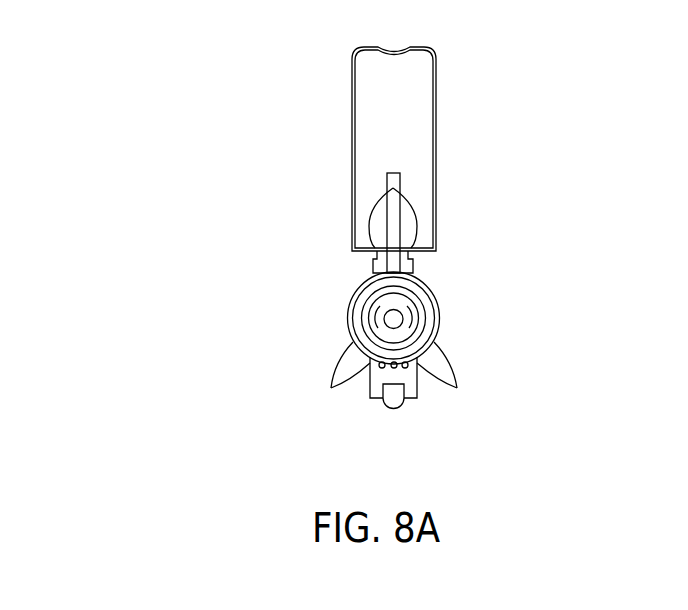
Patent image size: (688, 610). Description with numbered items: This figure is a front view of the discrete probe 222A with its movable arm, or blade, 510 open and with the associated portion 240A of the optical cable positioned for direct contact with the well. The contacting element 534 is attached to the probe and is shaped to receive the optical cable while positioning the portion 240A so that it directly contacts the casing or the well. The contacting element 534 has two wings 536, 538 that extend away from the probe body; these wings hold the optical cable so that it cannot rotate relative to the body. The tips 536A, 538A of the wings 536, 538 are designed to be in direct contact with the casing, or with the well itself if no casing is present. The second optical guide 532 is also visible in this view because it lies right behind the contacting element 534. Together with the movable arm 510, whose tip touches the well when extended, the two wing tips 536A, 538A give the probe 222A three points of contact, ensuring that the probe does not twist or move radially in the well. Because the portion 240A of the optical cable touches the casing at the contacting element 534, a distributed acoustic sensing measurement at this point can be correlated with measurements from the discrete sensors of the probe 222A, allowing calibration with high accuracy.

The discrete probe 222A is at (260, 206).
The movable arm 510 is at (423, 163).
The second optical guide 532 is at (370, 398).
The contacting element 534 is at (117, 367).
The wing 536 is at (328, 368).
The wing 538 is at (453, 367).
The tip of wing 536A is at (328, 389).
The tip of wing 538A is at (459, 388).
The portion of optical cable 240A is at (395, 409).